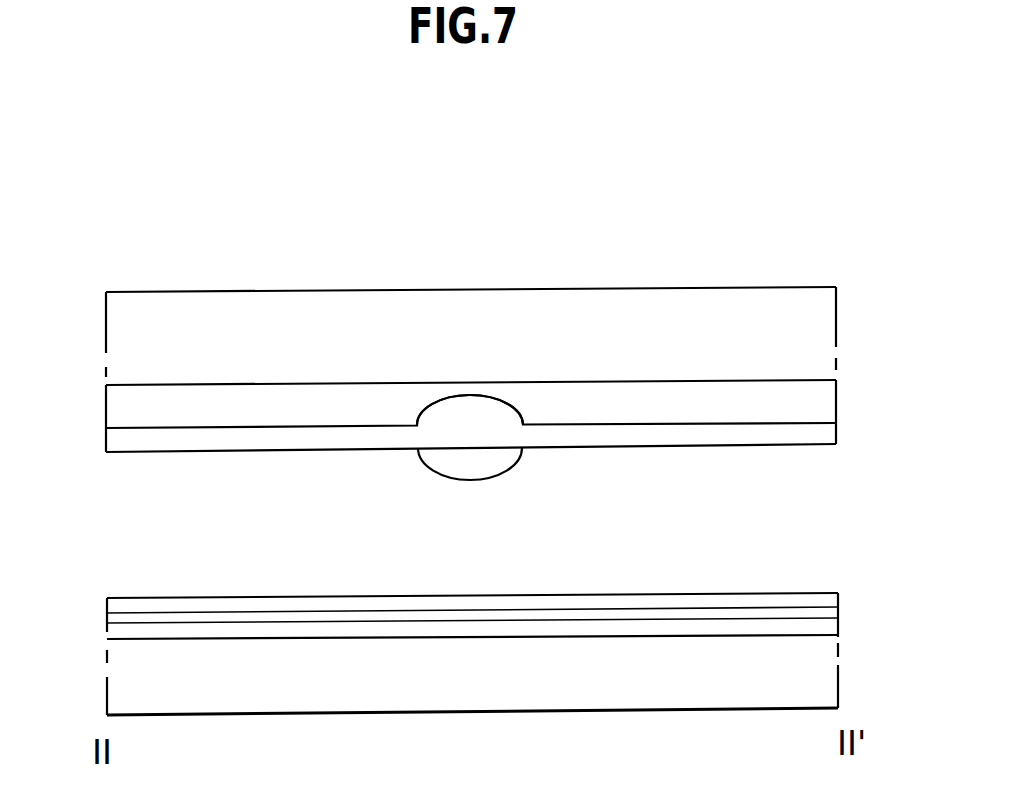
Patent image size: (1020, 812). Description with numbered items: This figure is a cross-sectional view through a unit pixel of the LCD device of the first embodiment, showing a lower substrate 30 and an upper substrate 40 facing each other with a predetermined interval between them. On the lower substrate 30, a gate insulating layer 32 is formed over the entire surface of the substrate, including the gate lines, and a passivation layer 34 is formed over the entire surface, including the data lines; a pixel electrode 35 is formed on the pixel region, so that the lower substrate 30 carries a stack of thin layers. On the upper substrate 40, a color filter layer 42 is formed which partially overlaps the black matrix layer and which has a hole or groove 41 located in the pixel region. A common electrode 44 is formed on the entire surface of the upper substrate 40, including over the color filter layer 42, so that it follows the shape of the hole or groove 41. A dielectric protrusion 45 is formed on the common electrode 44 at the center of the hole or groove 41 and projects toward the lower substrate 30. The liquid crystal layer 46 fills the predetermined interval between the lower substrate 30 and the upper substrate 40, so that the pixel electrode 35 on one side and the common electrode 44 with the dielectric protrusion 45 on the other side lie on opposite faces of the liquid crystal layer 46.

The lower substrate 30 is at (828, 670).
The gate insulating layer 32 is at (828, 627).
The passivation layer 34 is at (110, 618).
The pixel electrode 35 is at (828, 598).
The upper substrate 40 is at (828, 333).
The hole or groove 41 is at (483, 415).
The color filter layer 42 is at (828, 388).
The common electrode 44 is at (830, 431).
The dielectric protrusion 45 is at (503, 460).
The liquid crystal layer 46 is at (817, 520).